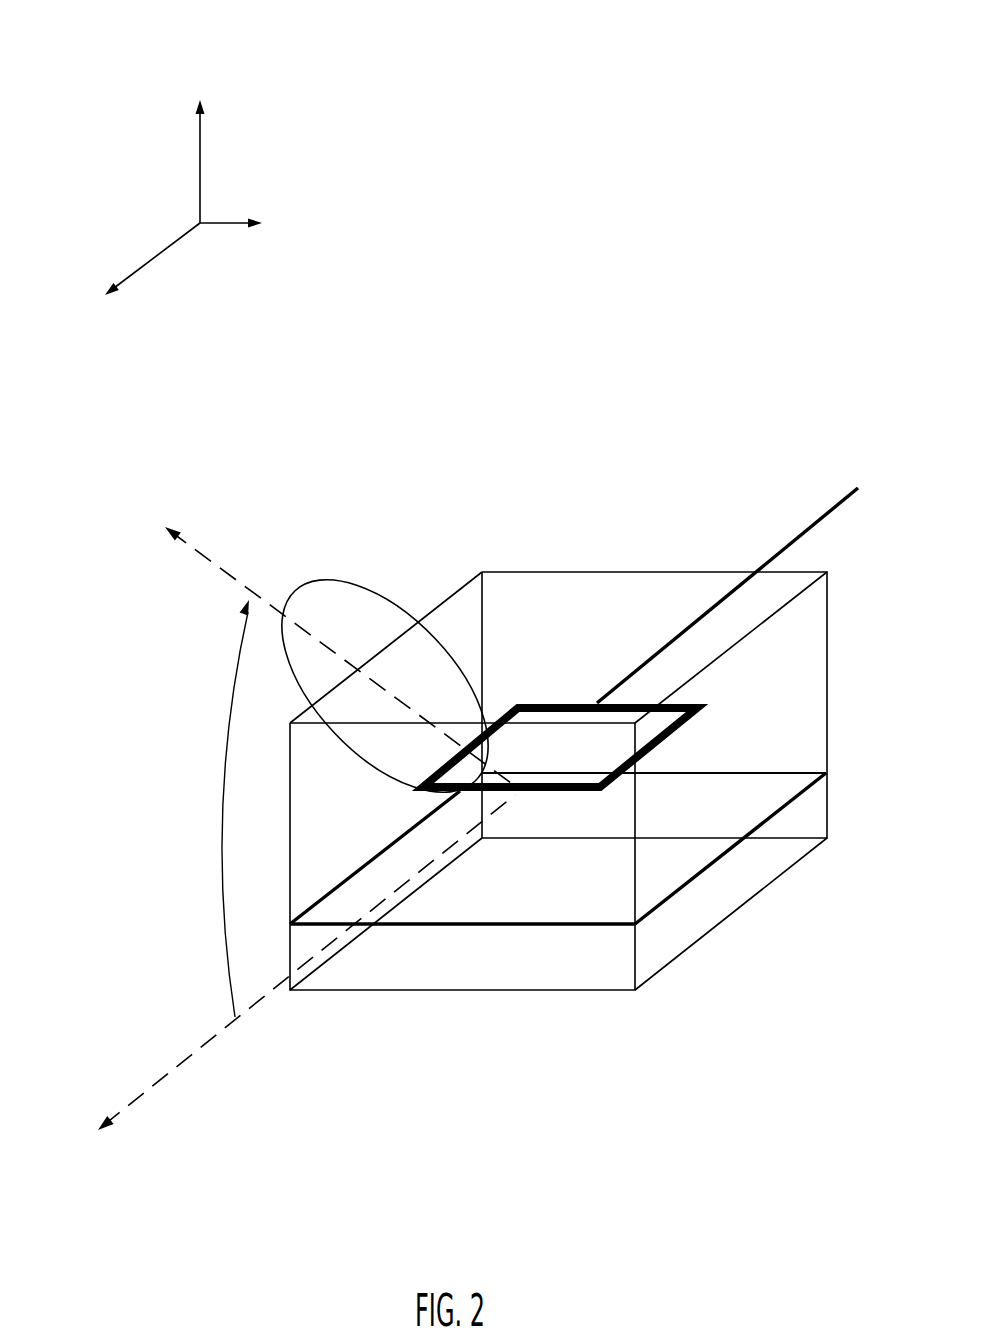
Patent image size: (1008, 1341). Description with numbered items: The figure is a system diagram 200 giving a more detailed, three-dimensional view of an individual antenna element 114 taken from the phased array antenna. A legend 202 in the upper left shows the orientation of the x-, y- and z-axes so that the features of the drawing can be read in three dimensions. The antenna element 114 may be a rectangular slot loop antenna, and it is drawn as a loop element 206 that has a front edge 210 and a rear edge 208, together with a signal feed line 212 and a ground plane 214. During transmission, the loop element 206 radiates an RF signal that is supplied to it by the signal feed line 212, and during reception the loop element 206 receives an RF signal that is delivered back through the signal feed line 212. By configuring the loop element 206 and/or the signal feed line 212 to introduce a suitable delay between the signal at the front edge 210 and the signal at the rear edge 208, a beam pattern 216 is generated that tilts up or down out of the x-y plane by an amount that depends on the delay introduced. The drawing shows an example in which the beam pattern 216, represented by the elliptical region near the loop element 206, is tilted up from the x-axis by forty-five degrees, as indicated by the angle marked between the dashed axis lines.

The system diagram 200 is at (468, 26).
The legend 202 is at (122, 139).
The antenna element 114 is at (528, 570).
The loop element 206 is at (530, 777).
The rear edge 208 is at (567, 703).
The front edge 210 is at (560, 793).
The signal feed line 212 is at (832, 505).
The ground plane 214 is at (778, 812).
The beam pattern 216 is at (352, 580).